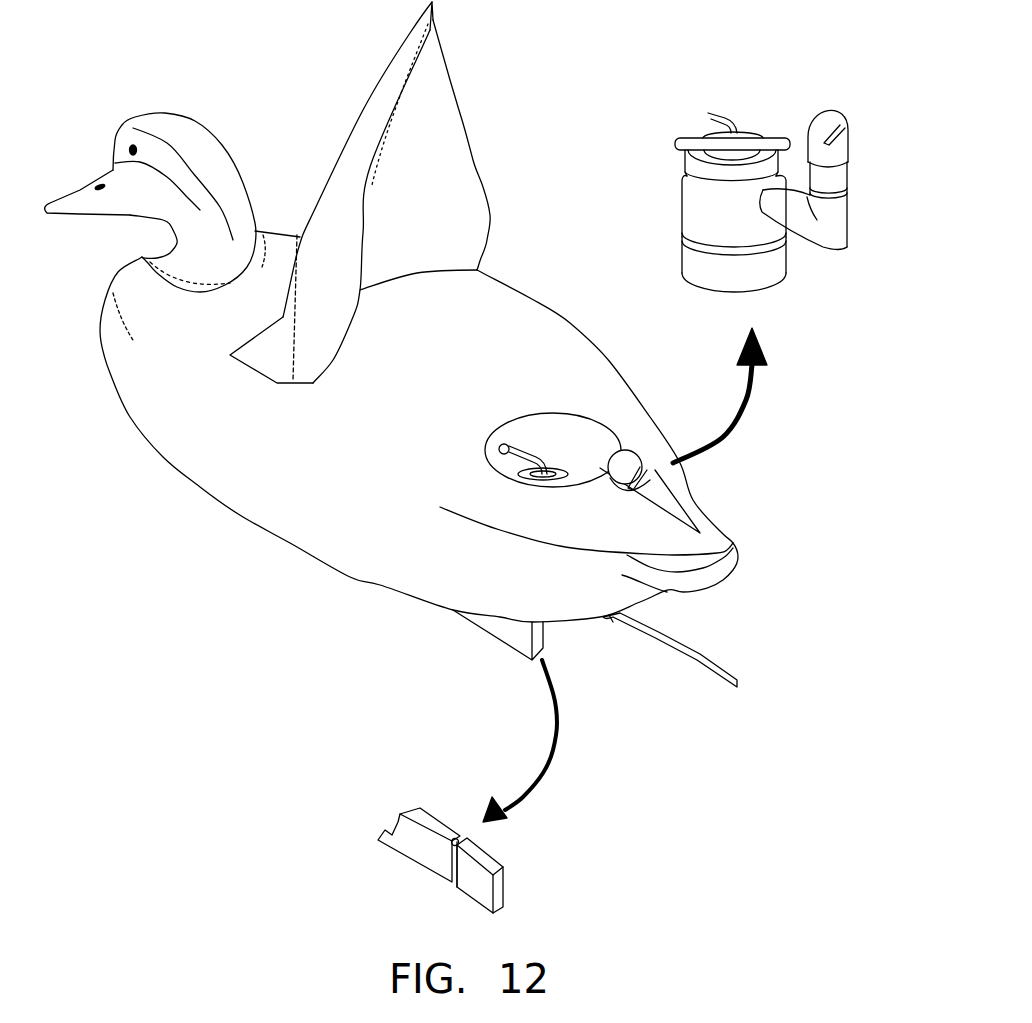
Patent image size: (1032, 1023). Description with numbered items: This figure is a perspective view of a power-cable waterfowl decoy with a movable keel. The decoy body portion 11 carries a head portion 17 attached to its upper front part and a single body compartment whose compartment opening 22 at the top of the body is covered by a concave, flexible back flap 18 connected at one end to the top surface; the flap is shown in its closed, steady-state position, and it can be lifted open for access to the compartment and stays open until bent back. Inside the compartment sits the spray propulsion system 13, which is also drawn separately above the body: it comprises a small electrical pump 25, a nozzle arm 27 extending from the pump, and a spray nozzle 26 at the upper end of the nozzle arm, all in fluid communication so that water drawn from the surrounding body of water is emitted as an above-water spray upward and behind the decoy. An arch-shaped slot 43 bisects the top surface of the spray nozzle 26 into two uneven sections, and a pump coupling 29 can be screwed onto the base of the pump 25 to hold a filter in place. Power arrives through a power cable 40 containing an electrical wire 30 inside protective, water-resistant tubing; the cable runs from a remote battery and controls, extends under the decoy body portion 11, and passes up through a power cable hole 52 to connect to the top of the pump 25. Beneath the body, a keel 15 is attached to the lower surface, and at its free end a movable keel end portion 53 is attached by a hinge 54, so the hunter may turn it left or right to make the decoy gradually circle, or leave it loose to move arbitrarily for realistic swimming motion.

The decoy body portion 11 is at (297, 603).
The spray propulsion system 13 is at (777, 107).
The keel 15 is at (542, 653).
The head portion 17 is at (200, 137).
The back flap 18 is at (350, 130).
The compartment opening 22 is at (577, 433).
The pump 25 is at (693, 200).
The spray nozzle 26 is at (630, 460).
The nozzle arm 27 is at (850, 213).
The pump coupling 29 is at (693, 265).
The electrical wire 30 is at (527, 453).
The power cable 40 is at (693, 660).
The arch-shaped slot 43 is at (833, 137).
The power cable hole 52 is at (508, 446).
The movable keel end portion 53 is at (503, 880).
The hinge 54 is at (460, 840).